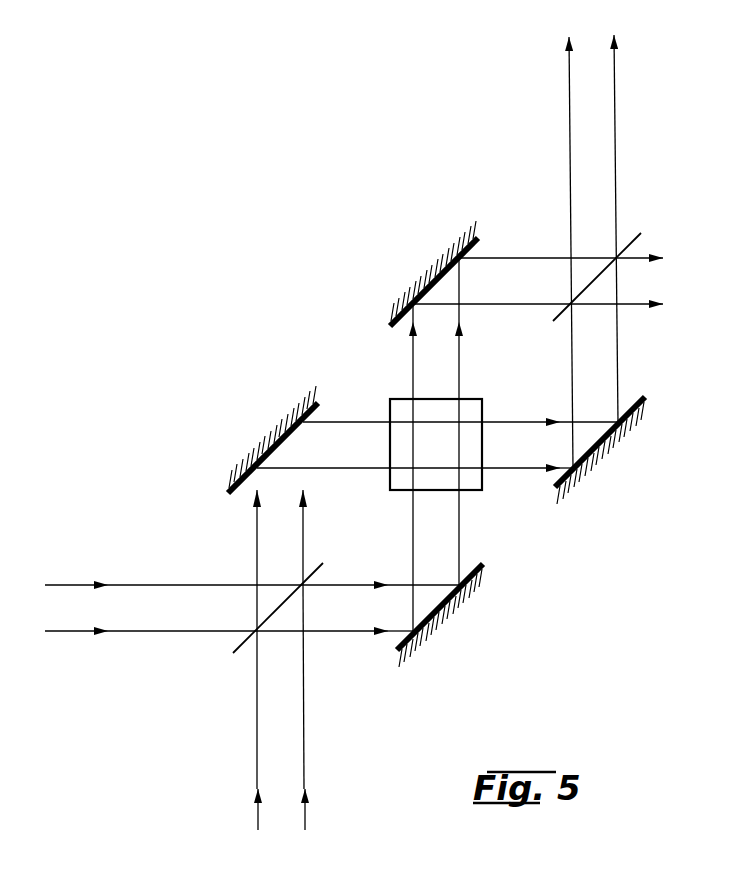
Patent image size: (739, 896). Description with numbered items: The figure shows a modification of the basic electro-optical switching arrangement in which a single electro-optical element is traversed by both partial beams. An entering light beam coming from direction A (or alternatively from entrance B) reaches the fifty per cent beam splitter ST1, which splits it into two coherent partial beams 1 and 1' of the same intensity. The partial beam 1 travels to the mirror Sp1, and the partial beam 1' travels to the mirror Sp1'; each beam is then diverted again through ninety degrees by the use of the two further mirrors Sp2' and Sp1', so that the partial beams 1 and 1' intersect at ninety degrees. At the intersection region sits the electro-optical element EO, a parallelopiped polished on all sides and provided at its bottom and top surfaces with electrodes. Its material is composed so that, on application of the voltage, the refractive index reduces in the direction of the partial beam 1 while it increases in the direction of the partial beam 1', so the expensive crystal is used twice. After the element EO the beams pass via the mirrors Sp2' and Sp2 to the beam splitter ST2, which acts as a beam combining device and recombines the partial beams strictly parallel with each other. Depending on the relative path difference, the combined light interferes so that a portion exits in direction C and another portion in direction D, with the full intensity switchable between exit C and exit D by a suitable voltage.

The entrance direction A is at (159, 608).
The entrance B is at (281, 726).
The exit direction C is at (593, 238).
The exit direction D is at (549, 281).
The partial beam 1 is at (341, 560).
The partial beam 1' is at (335, 587).
The beam splitter ST1 is at (238, 656).
The beam splitter ST2 is at (630, 246).
The mirror Sp1 is at (256, 439).
The mirror Sp1' is at (462, 615).
The mirror Sp2 is at (619, 450).
The mirror Sp2' is at (415, 427).
The electro-optical element EO is at (405, 405).